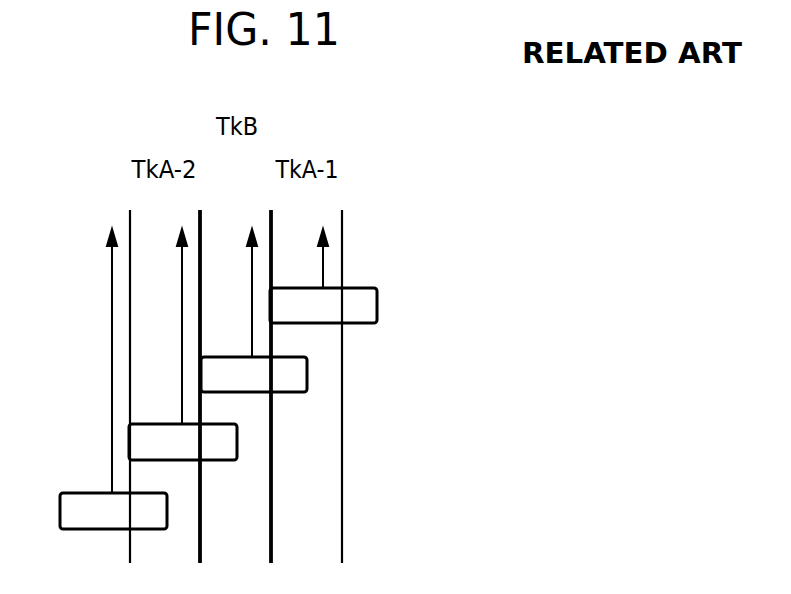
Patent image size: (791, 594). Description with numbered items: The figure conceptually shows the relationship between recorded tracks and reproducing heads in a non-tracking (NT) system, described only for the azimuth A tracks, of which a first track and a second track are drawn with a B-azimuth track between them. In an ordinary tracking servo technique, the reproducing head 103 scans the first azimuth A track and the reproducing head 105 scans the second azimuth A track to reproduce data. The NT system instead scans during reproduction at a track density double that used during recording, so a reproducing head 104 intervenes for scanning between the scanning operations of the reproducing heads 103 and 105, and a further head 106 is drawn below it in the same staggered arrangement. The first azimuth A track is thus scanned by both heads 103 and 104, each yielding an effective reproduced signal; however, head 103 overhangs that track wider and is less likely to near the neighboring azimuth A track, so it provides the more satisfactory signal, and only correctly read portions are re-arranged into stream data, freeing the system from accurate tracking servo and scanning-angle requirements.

The reproducing head 103 is at (377, 299).
The reproducing head 104 is at (307, 368).
The reproducing head 105 is at (237, 442).
The audio clip A 106 is at (167, 508).